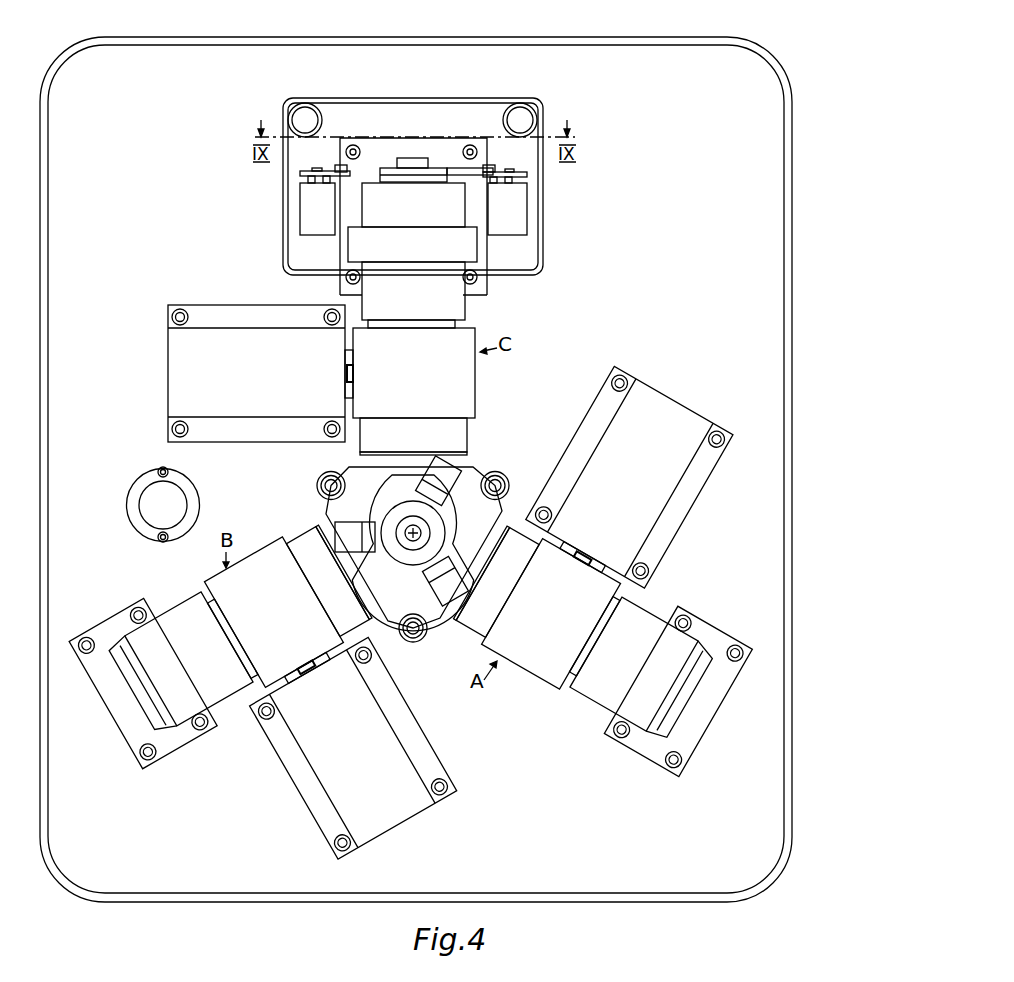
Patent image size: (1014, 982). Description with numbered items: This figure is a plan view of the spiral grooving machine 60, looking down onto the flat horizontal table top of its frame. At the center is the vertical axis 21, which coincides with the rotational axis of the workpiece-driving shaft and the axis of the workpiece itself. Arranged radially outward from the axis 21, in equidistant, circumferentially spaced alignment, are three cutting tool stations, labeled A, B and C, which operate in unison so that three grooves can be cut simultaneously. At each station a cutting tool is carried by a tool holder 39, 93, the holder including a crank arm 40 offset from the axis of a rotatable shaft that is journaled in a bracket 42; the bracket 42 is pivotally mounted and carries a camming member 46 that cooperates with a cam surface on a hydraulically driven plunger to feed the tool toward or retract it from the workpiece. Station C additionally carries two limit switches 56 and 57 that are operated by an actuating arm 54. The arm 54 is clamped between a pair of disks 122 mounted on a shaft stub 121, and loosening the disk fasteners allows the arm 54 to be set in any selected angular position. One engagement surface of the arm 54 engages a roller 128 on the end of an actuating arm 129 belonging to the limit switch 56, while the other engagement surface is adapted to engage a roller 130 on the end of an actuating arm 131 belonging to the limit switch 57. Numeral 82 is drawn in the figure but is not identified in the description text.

The vertical axis 21 is at (417, 539).
The tool holder 39 is at (356, 465).
The crank arm 40 is at (334, 494).
The bracket 42 is at (475, 388).
The camming member 46 is at (353, 373).
The actuating arm 54 is at (472, 169).
The limit switch 56 is at (527, 199).
The limit switch 57 is at (318, 236).
The spiral grooving machine 60 is at (121, 33).
The cabinet wall 82 is at (258, 879).
The tool holder / rib 93 is at (362, 519).
The shaft stub 121 is at (412, 158).
The disks 122 is at (384, 168).
The roller 128 is at (489, 166).
The actuating arm 129 is at (521, 168).
The roller 130 is at (339, 166).
The actuating arm 131 is at (313, 174).